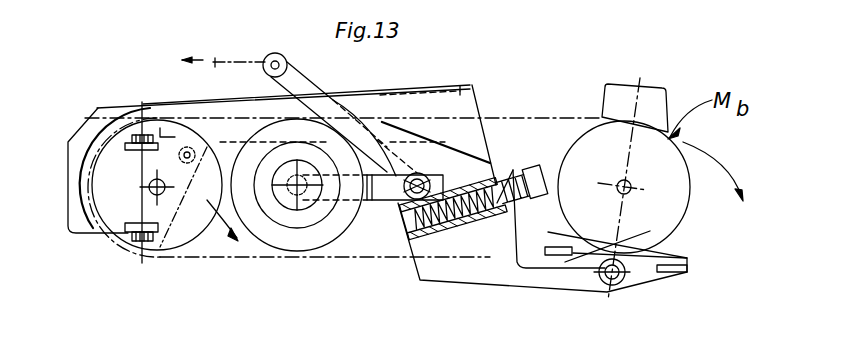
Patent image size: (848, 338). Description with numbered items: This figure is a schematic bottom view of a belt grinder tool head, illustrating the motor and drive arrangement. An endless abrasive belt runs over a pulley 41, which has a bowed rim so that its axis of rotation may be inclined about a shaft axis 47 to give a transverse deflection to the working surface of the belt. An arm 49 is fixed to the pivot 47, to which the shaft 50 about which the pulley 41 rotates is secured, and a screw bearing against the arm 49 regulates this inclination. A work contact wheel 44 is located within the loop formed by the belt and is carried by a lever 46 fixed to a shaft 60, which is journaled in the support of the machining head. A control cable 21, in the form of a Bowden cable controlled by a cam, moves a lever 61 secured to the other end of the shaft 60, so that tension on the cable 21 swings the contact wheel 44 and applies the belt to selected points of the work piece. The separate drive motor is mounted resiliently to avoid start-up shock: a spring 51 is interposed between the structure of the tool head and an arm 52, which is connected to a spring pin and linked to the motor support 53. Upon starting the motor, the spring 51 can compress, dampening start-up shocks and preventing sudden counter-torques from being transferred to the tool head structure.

The control cable 21 is at (168, 82).
The pulley 41 is at (242, 258).
The work contact wheel 44 is at (297, 238).
The lever 46 is at (383, 193).
The shaft axis (pivot) 47 is at (142, 168).
The arm 49 is at (171, 232).
The shaft 50 is at (163, 195).
The spring 51 is at (516, 180).
The arm 52 is at (542, 210).
The motor support 53 is at (658, 255).
The shaft 60 is at (423, 173).
The lever 61 is at (296, 82).